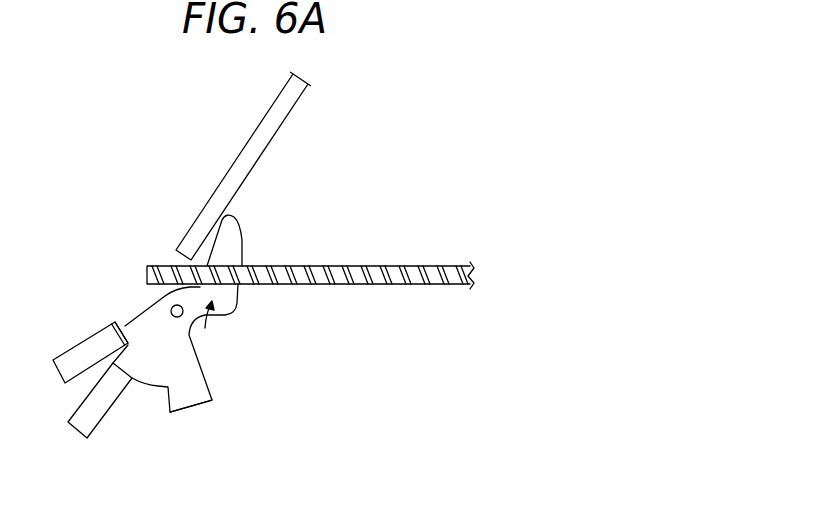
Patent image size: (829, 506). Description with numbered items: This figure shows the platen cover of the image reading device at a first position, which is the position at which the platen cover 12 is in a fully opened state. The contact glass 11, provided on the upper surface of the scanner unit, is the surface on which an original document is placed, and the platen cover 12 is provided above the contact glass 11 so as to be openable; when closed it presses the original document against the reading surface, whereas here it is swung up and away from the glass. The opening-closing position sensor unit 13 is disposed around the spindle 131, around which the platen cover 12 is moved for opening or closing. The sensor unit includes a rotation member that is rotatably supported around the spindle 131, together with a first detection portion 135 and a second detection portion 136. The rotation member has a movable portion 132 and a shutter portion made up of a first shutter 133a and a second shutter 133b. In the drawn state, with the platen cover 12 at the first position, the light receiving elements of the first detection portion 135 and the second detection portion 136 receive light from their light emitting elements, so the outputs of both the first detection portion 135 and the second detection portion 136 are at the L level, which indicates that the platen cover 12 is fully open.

The contact glass 11 is at (401, 264).
The platen cover 12 is at (238, 161).
The opening-closing position sensor unit 13 is at (182, 371).
The spindle 131 is at (172, 306).
The movable portion 132 is at (231, 249).
The first shutter 133a is at (103, 324).
The second shutter 133b is at (192, 397).
The first detection portion 135 is at (77, 353).
The second detection portion 136 is at (93, 403).